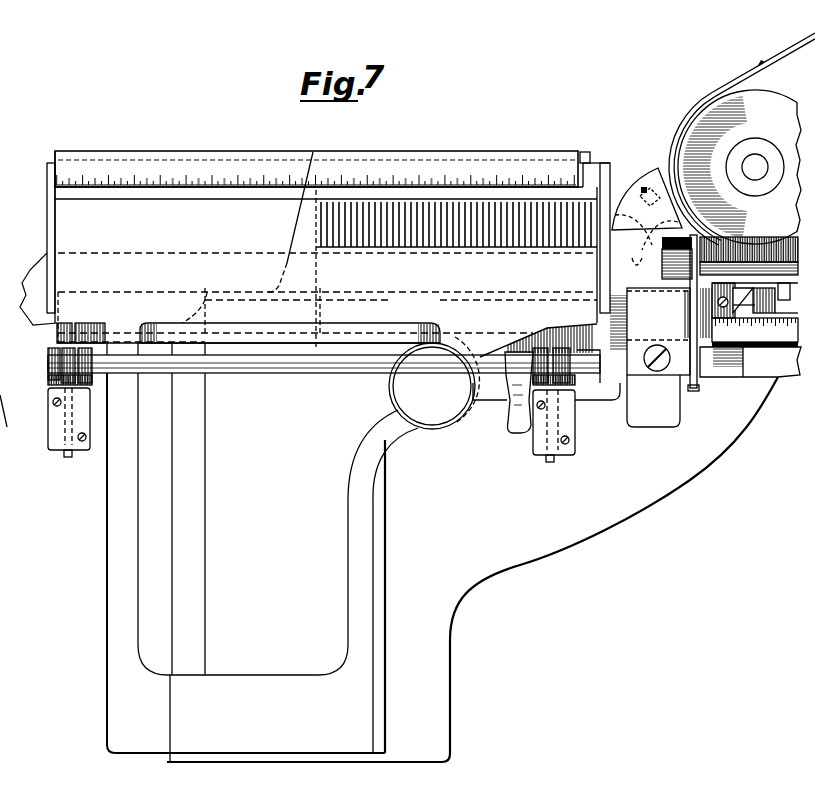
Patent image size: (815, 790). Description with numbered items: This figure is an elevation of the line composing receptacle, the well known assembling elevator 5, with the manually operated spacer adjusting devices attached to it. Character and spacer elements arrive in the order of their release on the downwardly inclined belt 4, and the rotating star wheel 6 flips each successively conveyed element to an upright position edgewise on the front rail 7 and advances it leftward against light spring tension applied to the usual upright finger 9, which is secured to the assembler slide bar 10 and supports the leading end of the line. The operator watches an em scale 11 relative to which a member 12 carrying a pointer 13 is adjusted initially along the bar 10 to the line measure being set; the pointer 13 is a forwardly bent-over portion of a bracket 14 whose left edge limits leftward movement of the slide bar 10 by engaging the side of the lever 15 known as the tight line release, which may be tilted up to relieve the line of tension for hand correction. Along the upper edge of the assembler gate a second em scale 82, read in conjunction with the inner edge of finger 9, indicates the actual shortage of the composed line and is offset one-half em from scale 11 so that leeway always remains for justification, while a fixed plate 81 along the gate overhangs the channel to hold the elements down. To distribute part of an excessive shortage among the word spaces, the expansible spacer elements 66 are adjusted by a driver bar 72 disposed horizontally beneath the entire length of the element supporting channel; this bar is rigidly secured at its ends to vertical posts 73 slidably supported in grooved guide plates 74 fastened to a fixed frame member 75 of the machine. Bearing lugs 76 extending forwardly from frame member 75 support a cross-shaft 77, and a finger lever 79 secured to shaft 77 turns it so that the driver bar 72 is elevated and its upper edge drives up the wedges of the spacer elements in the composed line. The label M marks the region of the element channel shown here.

The downwardly inclined belt 4 is at (752, 68).
The assembling elevator 5 is at (106, 606).
The rotating star wheel 6 is at (638, 200).
The front rail 7 is at (118, 254).
The upright finger 9 is at (296, 217).
The assembler slide bar 10 is at (622, 335).
The em scale 11 is at (764, 333).
The member 12 is at (782, 300).
The pointer 13 is at (750, 303).
The bracket 14 is at (712, 300).
The lever 15 is at (698, 388).
The expansible spacer element 66 is at (523, 245).
The driver bar 72 is at (365, 350).
The vertical post 73 is at (70, 457).
The grooved guide plate 74 is at (53, 445).
The fixed frame member 75 is at (578, 520).
The bearing lug 76 is at (56, 362).
The cross-shaft 77 is at (262, 383).
The finger lever 79 is at (512, 426).
The fixed plate 81 is at (588, 160).
The em scale 82 is at (174, 178).
The marker M is at (420, 240).